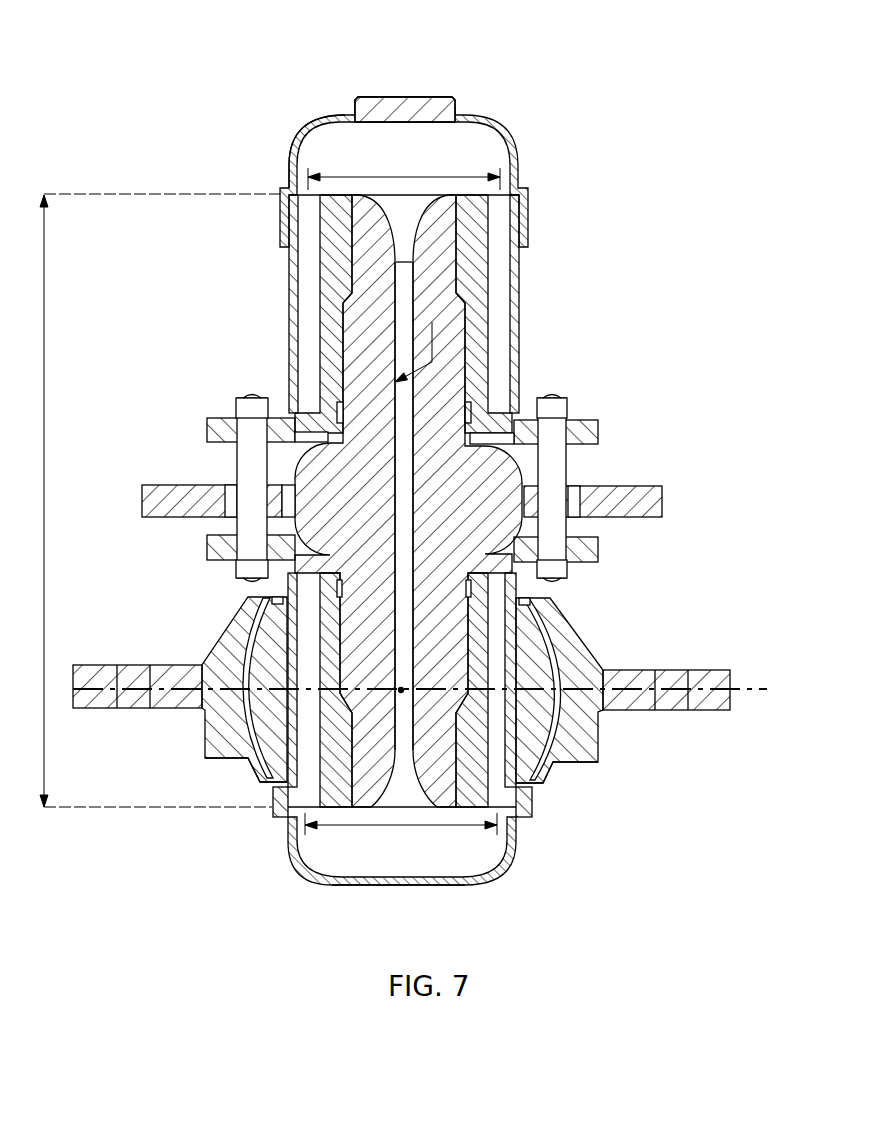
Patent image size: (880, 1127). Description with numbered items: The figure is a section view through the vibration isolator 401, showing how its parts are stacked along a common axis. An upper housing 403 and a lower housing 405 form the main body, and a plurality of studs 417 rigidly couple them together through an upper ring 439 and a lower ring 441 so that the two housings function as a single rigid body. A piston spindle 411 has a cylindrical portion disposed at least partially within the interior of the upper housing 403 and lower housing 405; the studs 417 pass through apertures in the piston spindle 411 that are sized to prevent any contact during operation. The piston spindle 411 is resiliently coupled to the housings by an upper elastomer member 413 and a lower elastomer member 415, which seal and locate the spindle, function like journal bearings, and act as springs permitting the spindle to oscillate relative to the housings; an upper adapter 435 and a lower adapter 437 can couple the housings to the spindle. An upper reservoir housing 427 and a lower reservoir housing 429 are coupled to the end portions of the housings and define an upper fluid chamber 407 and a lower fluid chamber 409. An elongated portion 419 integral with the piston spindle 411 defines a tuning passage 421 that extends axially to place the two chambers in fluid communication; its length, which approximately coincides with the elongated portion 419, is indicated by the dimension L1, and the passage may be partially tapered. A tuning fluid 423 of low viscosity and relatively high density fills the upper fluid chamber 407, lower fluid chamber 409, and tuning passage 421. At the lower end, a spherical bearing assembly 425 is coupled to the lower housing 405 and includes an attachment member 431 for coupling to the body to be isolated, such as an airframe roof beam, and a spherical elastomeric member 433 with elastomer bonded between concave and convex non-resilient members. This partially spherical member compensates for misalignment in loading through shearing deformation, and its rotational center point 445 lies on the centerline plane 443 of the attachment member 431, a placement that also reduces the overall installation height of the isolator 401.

The isolator 401 is at (538, 57).
The upper housing 403 is at (522, 320).
The lower housing 405 is at (546, 784).
The upper fluid chamber 407 is at (495, 143).
The lower fluid chamber 409 is at (487, 862).
The piston spindle 411 is at (142, 500).
The upper elastomer member 413 is at (300, 275).
The lower elastomer member 415 is at (532, 808).
The studs 417 is at (245, 470).
The elongated portion 419 is at (552, 770).
The tuning passage 421 is at (408, 463).
The tuning fluid 423 is at (318, 138).
The spherical bearing assembly 425 is at (586, 633).
The upper reservoir housing 427 is at (413, 103).
The lower reservoir housing 429 is at (403, 890).
The attachment member 431 is at (92, 703).
The spherical elastomeric member 433 is at (245, 673).
The upper adapter 435 is at (485, 300).
The lower adapter 437 is at (283, 738).
The upper ring 439 is at (207, 427).
The lower ring 441 is at (207, 549).
The centerline plane 443 is at (747, 692).
The rotational center point 445 is at (400, 690).